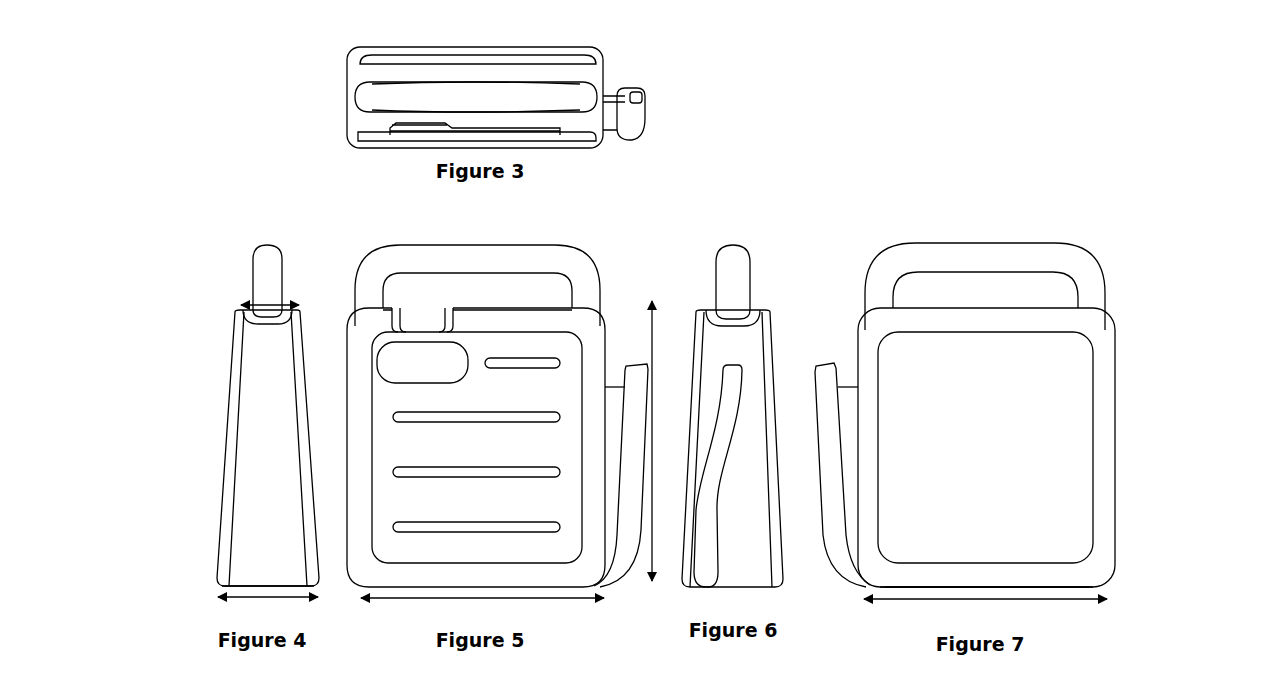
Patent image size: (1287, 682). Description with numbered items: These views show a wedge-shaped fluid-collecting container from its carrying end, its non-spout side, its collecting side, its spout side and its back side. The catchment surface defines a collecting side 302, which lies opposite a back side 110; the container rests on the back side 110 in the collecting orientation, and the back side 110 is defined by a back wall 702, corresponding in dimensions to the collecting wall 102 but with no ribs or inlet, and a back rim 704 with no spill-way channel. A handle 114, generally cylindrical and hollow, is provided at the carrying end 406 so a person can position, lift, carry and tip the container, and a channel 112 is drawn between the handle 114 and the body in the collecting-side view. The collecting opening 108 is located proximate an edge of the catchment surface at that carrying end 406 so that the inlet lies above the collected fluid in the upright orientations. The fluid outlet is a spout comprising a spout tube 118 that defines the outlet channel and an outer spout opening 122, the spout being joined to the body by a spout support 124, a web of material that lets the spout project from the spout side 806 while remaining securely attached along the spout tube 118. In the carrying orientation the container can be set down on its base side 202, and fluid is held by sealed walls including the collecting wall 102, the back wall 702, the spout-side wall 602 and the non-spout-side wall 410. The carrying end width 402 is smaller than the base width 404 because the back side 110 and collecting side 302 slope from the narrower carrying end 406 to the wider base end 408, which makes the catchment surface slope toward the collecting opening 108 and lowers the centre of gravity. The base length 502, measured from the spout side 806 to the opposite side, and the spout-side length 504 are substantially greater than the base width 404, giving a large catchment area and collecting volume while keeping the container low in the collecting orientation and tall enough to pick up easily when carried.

In FIG. 3, the back side 110 is at (340, 62).
In FIG. 3, the handle 114 is at (384, 96).
In FIG. 5, the handle 114 is at (527, 260).
In FIG. 7, the handle 114 is at (1004, 263).
In FIG. 3, the collecting side 302 is at (340, 170).
In FIG. 3, the spout support 124 is at (612, 92).
In FIG. 7, the spout support 124 is at (845, 387).
In FIG. 3, the outer spout opening 122 is at (645, 97).
In FIG. 7, the outer spout opening 122 is at (818, 363).
In FIG. 3, the spout tube 118 is at (634, 133).
In FIG. 4, the carrying end 406 is at (232, 324).
In FIG. 7, the carrying end 406 is at (1122, 323).
In FIG. 4, the carrying end width 402 is at (271, 300).
In FIG. 4, the non-spout-side wall 410 is at (255, 498).
In FIG. 4, the base end 408 is at (185, 613).
In FIG. 7, the base end 408 is at (1122, 595).
In FIG. 4, the base width 404 is at (262, 609).
In FIG. 5, the channel 112 is at (419, 318).
In FIG. 5, the collecting opening 108 is at (410, 373).
In FIG. 5, the collecting wall 102 is at (509, 465).
In FIG. 5, the spout-side length 504 is at (653, 342).
In FIG. 5, the base length 502 is at (482, 611).
In FIG. 7, the base length 502 is at (1045, 601).
In FIG. 6, the spout-side wall 602 is at (730, 540).
In FIG. 6, the spout side 806 is at (743, 523).
In FIG. 7, the back wall 702 is at (1037, 411).
In FIG. 7, the back rim 704 is at (1102, 470).
In FIG. 7, the base side 202 is at (1063, 592).